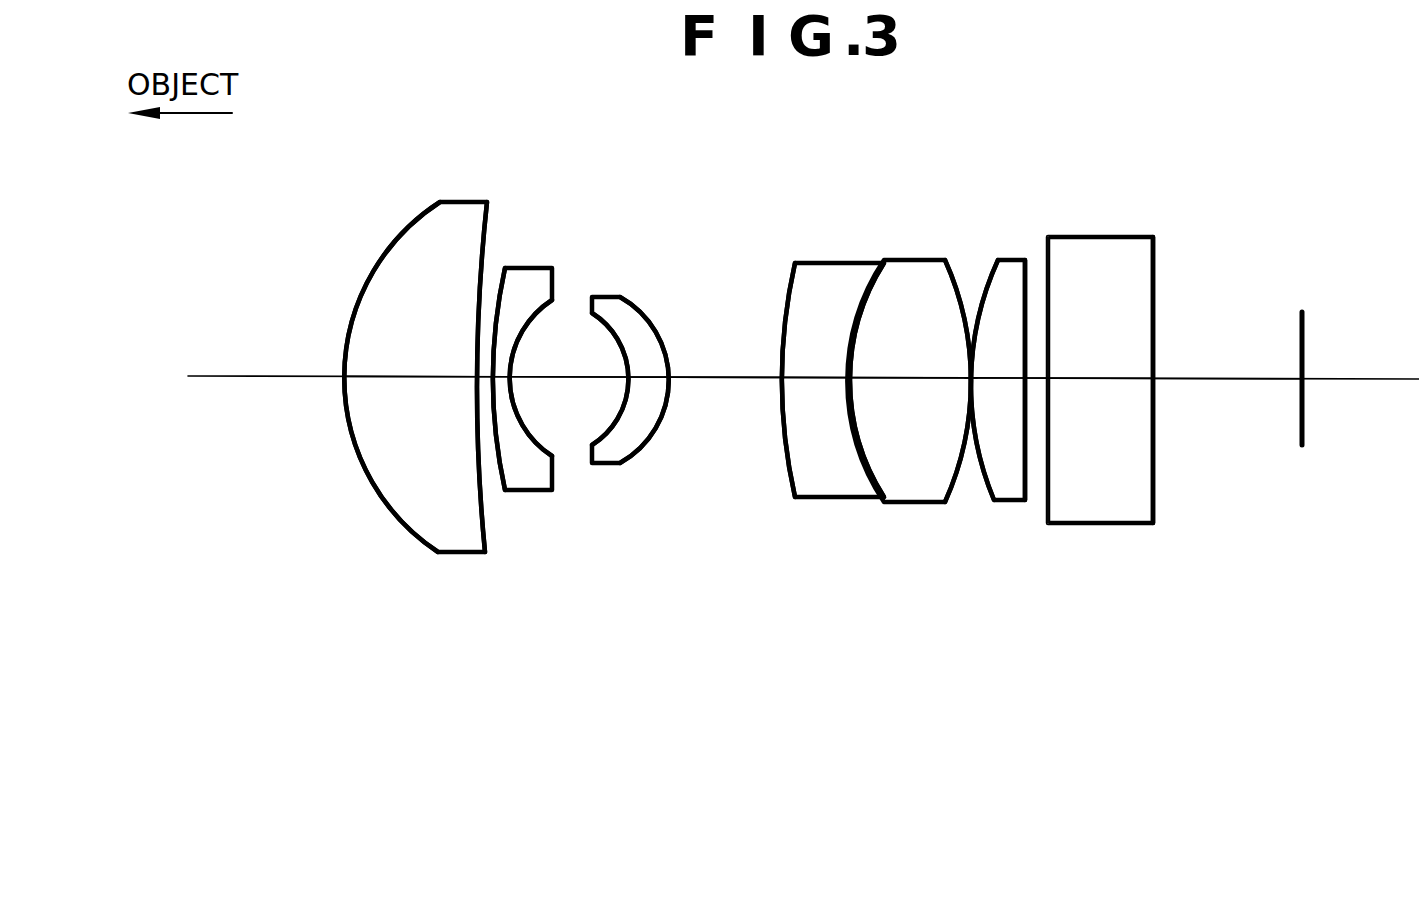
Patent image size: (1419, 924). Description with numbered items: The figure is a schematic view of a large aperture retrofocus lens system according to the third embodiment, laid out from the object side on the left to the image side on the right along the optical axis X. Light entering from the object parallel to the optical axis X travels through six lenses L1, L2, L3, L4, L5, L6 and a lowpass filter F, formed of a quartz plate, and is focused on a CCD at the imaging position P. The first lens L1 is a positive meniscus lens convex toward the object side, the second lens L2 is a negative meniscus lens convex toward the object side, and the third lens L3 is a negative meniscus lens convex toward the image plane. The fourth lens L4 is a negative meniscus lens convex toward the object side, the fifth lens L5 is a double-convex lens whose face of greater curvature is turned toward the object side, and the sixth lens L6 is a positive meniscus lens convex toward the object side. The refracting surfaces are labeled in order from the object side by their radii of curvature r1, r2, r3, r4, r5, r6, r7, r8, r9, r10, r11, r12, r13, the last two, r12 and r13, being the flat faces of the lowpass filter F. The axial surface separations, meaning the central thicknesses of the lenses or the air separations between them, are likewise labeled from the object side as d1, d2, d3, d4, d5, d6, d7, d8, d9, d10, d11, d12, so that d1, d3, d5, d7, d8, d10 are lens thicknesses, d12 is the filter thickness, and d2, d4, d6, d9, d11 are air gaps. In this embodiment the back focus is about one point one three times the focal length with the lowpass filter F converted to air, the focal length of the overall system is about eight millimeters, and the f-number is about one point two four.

The first lens L1 is at (418, 257).
The second lens L2 is at (547, 267).
The third lens L3 is at (615, 298).
The fourth lens L4 is at (803, 277).
The fifth lens L5 is at (907, 280).
The sixth lens L6 is at (1008, 260).
The lowpass filter F is at (1143, 265).
The imaging position P is at (1310, 378).
The optical axis X is at (1228, 380).
The radius of curvature of first refracting surface r1 is at (410, 532).
The radius of curvature of second refracting surface r2 is at (487, 530).
The radius of curvature of third refracting surface r3 is at (497, 483).
The radius of curvature of fourth refracting surface r4 is at (543, 437).
The radius of curvature of fifth refracting surface r5 is at (606, 443).
The radius of curvature of sixth refracting surface r6 is at (653, 450).
The radius of curvature of seventh refracting surface r7 is at (787, 443).
The radius of curvature of eighth refracting surface r8 is at (867, 480).
The radius of curvature of ninth refracting surface r9 is at (955, 483).
The radius of curvature of tenth refracting surface r10 is at (993, 487).
The radius of curvature of eleventh refracting surface r11 is at (1028, 483).
The radius of curvature of twelfth refracting surface r12 is at (1048, 482).
The radius of curvature of thirteenth refracting surface r13 is at (1153, 483).
The first axial surface separation d1 is at (403, 380).
The second axial surface separation d2 is at (477, 378).
The third axial surface separation d3 is at (500, 378).
The fourth axial surface separation d4 is at (563, 380).
The fifth axial surface separation d5 is at (640, 380).
The sixth axial surface separation d6 is at (723, 380).
The seventh axial surface separation d7 is at (812, 380).
The eighth axial surface separation d8 is at (910, 380).
The ninth axial surface separation d9 is at (972, 380).
The tenth axial surface separation d10 is at (995, 378).
The eleventh axial surface separation d11 is at (1033, 378).
The twelfth axial surface separation d12 is at (1097, 380).